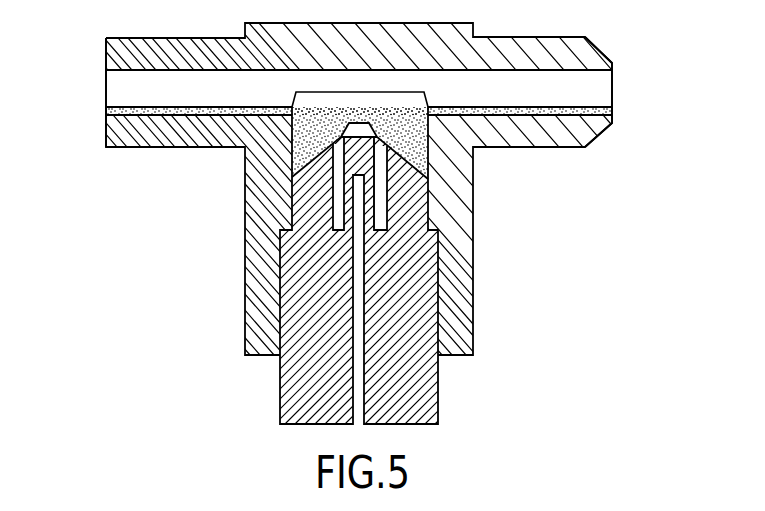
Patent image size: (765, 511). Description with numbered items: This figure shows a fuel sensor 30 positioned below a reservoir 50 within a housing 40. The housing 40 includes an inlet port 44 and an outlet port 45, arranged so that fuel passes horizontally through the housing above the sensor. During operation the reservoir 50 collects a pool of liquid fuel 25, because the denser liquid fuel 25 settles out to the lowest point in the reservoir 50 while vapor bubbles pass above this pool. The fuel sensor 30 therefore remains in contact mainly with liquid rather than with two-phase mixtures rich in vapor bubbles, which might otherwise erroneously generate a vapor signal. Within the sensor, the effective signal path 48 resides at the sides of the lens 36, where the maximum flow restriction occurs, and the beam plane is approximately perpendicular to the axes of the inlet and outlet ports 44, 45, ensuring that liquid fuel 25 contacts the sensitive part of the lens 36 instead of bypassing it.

The liquid fuel 25 is at (483, 106).
The fuel sensor 30 is at (280, 391).
The lens 36 is at (333, 137).
The housing 40 is at (245, 255).
The inlet port 44 is at (106, 87).
The outlet port 45 is at (600, 88).
The effective signal path 48 is at (380, 218).
The reservoir 50 is at (400, 112).